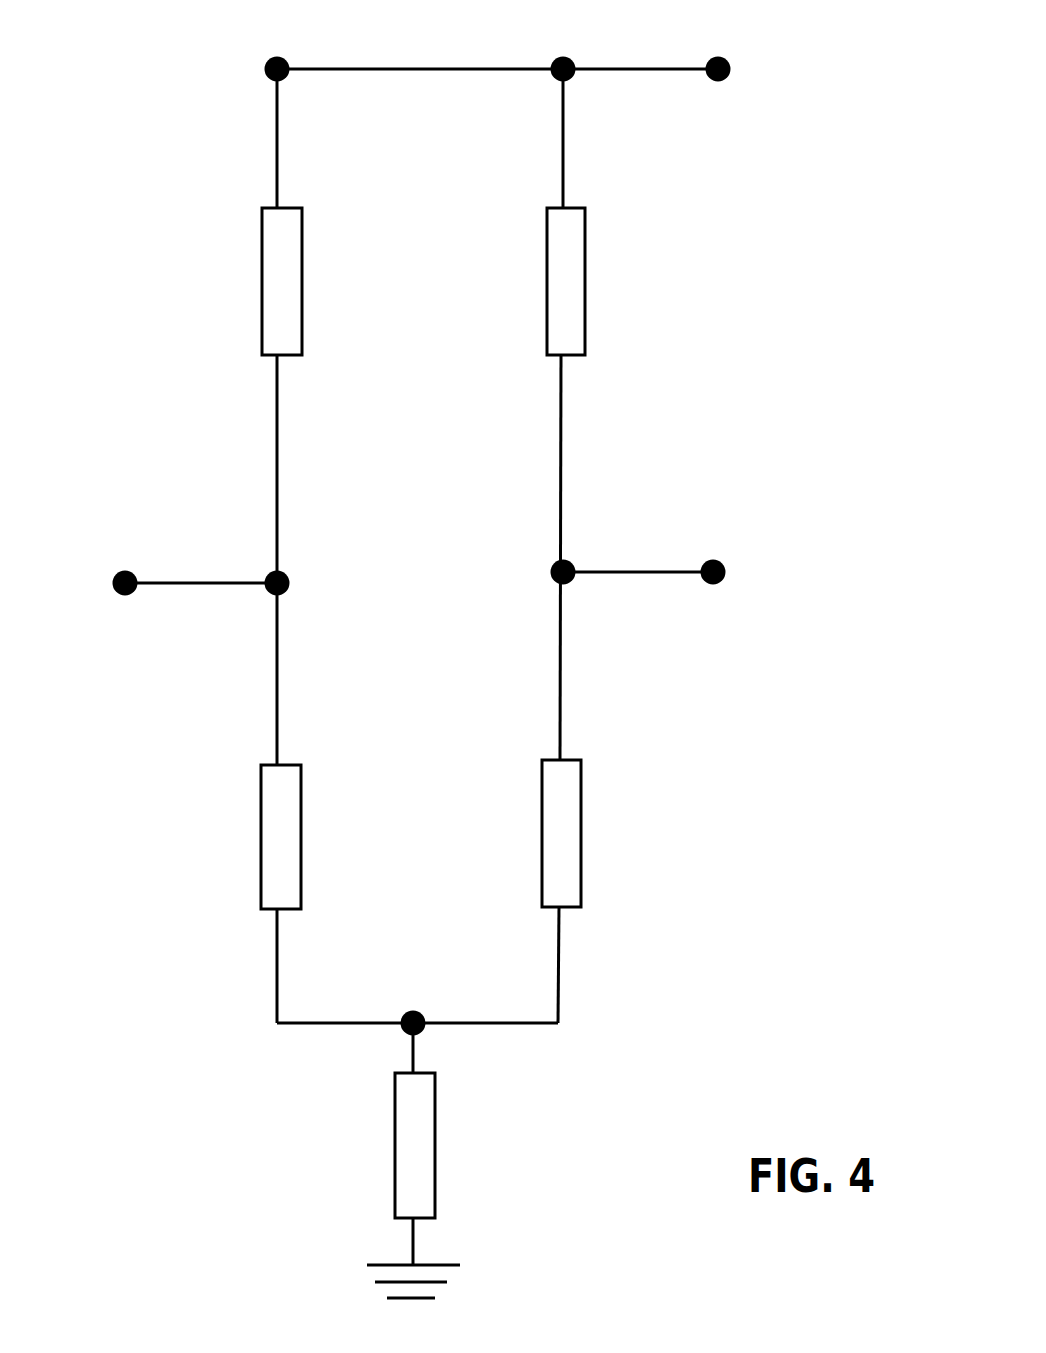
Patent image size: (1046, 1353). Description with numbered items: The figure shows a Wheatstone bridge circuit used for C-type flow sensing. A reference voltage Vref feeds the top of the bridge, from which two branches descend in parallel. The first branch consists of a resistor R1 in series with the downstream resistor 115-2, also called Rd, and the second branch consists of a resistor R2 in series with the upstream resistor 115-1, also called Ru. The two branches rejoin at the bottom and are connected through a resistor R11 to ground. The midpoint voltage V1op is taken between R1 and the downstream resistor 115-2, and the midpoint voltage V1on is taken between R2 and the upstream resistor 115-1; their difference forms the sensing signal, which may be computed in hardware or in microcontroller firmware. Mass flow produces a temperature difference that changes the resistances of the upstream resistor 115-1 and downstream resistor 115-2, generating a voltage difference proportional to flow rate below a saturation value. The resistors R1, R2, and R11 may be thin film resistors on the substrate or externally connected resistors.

The upstream resistor Ru 115-1 is at (606, 782).
The downstream resistor Rd 115-2 is at (228, 786).
The resistor R1 is at (231, 281).
The resistor R2 is at (602, 281).
The resistor R11 is at (461, 1145).
The reference voltage Vref is at (504, 41).
The positive midpoint voltage V1op is at (174, 552).
The negative midpoint voltage V1on is at (670, 538).